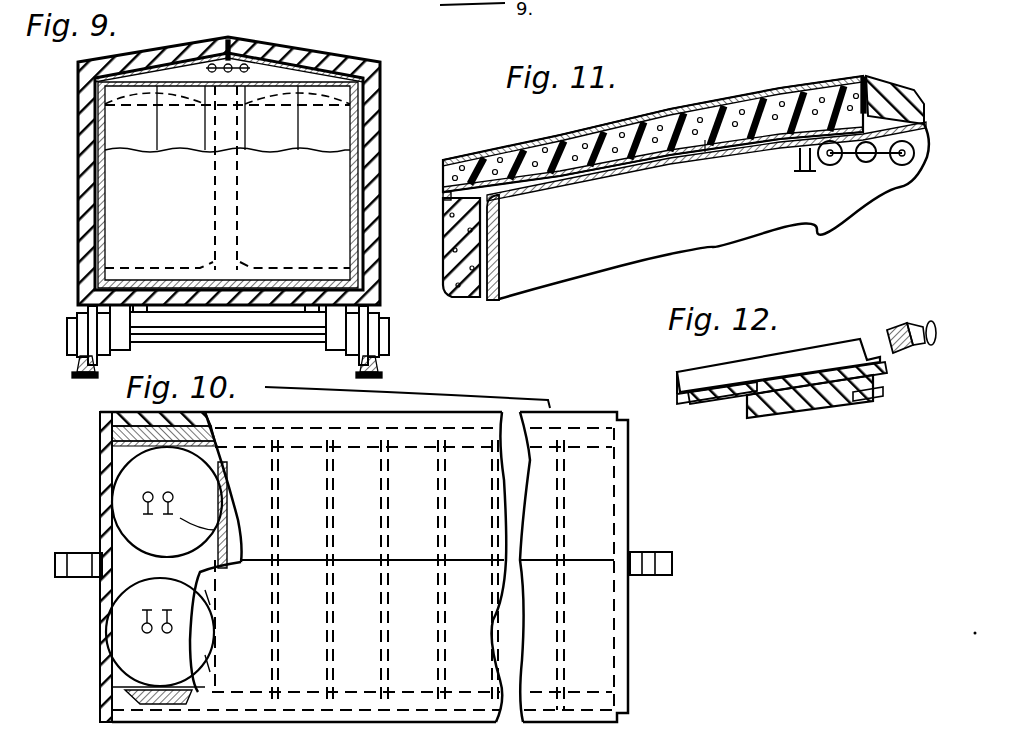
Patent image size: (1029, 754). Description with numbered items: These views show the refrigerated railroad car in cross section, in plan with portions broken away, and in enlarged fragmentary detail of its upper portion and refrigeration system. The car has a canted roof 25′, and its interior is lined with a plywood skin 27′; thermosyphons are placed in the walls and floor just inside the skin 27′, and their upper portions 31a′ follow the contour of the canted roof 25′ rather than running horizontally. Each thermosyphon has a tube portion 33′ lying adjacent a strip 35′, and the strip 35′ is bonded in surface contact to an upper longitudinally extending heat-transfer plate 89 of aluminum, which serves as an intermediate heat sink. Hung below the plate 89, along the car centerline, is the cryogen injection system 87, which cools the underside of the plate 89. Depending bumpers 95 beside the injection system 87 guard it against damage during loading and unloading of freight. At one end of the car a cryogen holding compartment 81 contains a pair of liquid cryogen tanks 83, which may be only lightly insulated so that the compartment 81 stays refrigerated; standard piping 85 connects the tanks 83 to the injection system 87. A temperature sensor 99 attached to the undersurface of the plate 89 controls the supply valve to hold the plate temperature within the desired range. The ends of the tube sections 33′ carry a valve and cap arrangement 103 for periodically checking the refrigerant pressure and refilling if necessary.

In FIG. 9, the canted roof 25′ is at (178, 60).
In FIG. 11, the canted roof 25′ is at (822, 62).
In FIG. 9, the skin 27′ is at (108, 197).
In FIG. 11, the skin 27′ is at (506, 238).
In FIG. 12, the skin 27′ is at (726, 420).
In FIG. 11, the upper portions of the thermosyphons 31a′ is at (690, 102).
In FIG. 12, the upper portions of the thermosyphons 31a′ is at (695, 378).
In FIG. 12, the tube portion 33′ is at (800, 356).
In FIG. 12, the strip 35′ is at (856, 346).
In FIG. 10, the cryogen holding compartment 81 is at (100, 592).
In FIG. 9, the liquid cryogen tanks 83 is at (380, 152).
In FIG. 10, the liquid cryogen tanks 83 is at (130, 486).
In FIG. 10, the piping 85 is at (140, 505).
In FIG. 9, the cryogen injection system 87 is at (264, 74).
In FIG. 11, the cryogen injection system 87 is at (873, 176).
In FIG. 10, the cryogen injection system 87 is at (208, 544).
In FIG. 11, the heat-transfer plate 89 is at (710, 152).
In FIG. 12, the heat-transfer plate 89 is at (812, 412).
In FIG. 11, the bumpers 95 is at (796, 181).
In FIG. 12, the temperature sensor 99 is at (886, 400).
In FIG. 12, the valve and cap arrangement 103 is at (928, 338).